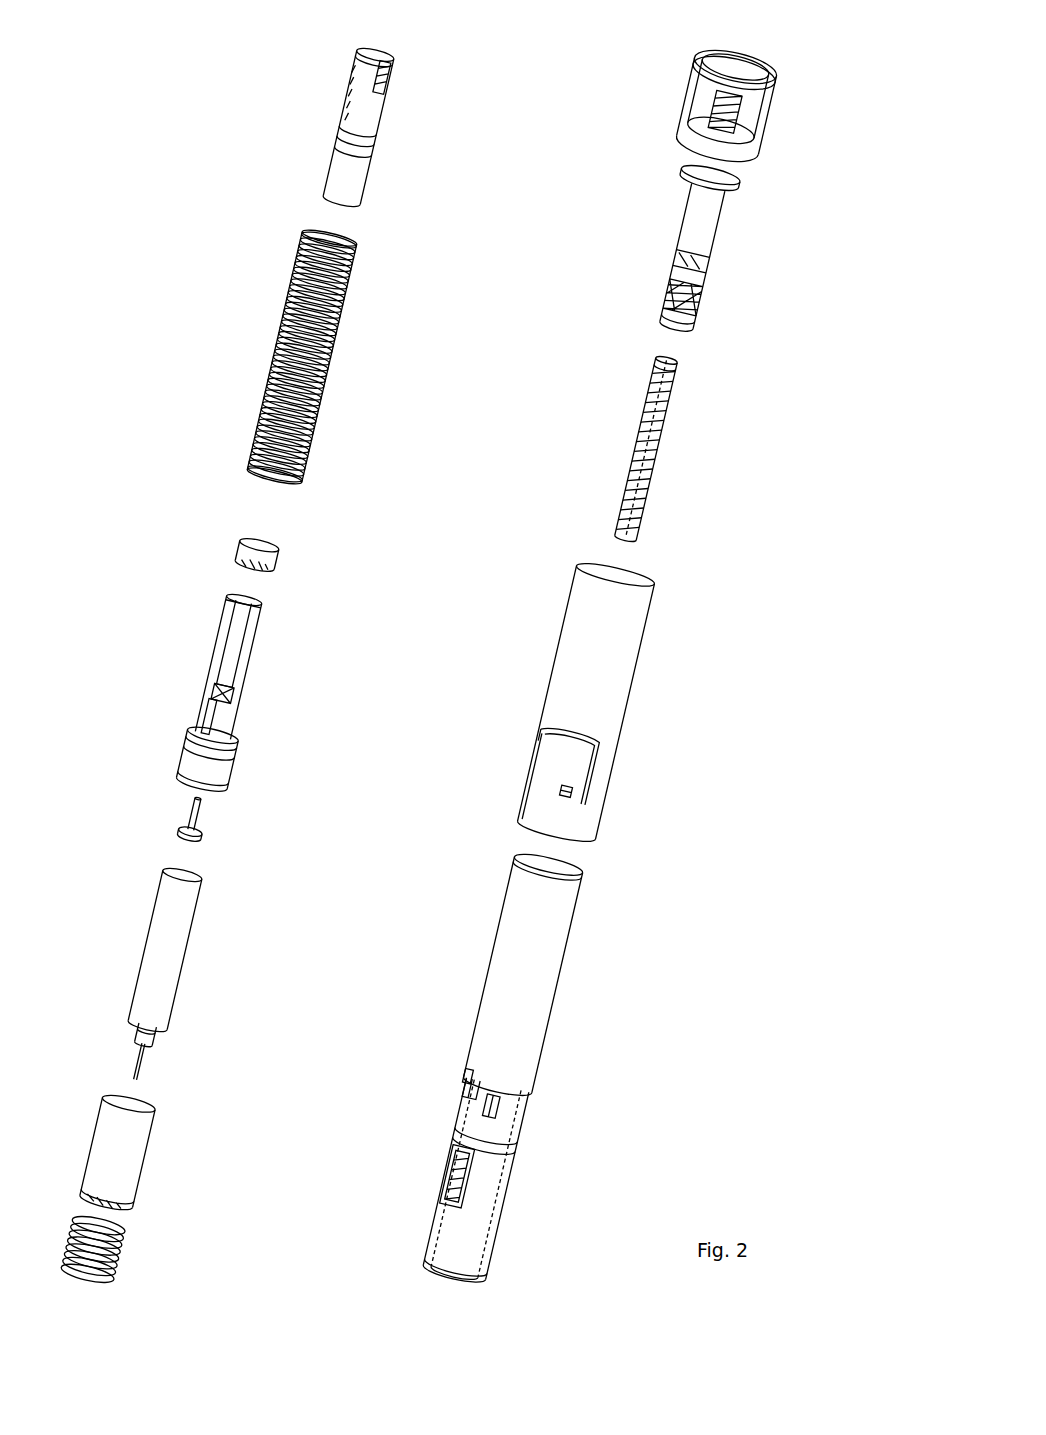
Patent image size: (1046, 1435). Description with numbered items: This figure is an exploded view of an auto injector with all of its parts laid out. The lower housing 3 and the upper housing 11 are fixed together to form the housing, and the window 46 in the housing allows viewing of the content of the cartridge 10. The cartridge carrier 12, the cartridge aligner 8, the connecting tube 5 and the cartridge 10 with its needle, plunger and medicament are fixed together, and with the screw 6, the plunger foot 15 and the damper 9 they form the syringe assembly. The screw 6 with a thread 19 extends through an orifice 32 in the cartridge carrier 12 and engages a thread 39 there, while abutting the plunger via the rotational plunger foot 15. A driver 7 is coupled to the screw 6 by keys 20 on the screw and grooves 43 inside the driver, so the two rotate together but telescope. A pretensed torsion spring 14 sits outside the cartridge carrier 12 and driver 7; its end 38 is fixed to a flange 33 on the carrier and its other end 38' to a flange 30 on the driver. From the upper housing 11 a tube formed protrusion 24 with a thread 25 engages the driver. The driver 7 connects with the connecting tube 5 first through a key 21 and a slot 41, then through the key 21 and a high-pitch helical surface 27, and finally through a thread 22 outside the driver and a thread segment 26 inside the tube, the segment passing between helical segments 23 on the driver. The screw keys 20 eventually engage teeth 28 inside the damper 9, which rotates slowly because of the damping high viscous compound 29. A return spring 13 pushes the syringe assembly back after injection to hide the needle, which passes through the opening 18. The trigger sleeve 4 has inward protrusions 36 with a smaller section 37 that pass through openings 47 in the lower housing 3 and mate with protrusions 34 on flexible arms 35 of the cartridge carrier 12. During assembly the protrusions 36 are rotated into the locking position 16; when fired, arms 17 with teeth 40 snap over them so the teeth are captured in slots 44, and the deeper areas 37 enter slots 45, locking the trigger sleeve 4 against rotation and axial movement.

The lower housing 3 is at (496, 1081).
The trigger sleeve 4 is at (585, 702).
The connecting tube 5 is at (356, 115).
The screw 6 is at (632, 446).
The driver 7 is at (696, 287).
The cartridge aligner 8 is at (150, 1167).
The damper 9 is at (254, 556).
The cartridge 10 is at (124, 967).
The upper housing 11 is at (743, 95).
The cartridge carrier 12 is at (209, 684).
The return spring 13 is at (126, 1262).
The torsion spring 14 is at (240, 327).
The plunger foot 15 is at (178, 819).
The locking position 16 is at (530, 1093).
The arms 17 is at (476, 1124).
The opening 18 is at (486, 1275).
The thread 19 is at (645, 508).
The keys 20 is at (656, 378).
The key 21 is at (729, 189).
The thread 22 is at (668, 304).
The helical segments 23 is at (701, 262).
The tube formed protrusion 24 is at (704, 76).
The thread 25 is at (745, 110).
The thread segment 26 is at (362, 139).
The helical surface 27 is at (386, 60).
The teeth 28 is at (270, 563).
The damping high viscous compound 29 is at (270, 544).
The flange 30 is at (684, 176).
The orifice 32 is at (234, 694).
The flange 33 is at (220, 748).
The protrusions 34 is at (200, 741).
The flexible arms 35 is at (196, 735).
The protrusions 36 is at (583, 793).
The smaller section 37 is at (598, 782).
The end 38 is at (213, 456).
The other end 38' is at (267, 208).
The thread 39 is at (238, 688).
The teeth 40 is at (494, 1110).
The slot 41 is at (389, 84).
The grooves 43 is at (683, 337).
The slots 44 is at (470, 1101).
The slots 45 is at (504, 1141).
The window 46 is at (442, 1188).
The openings 47 is at (470, 1086).